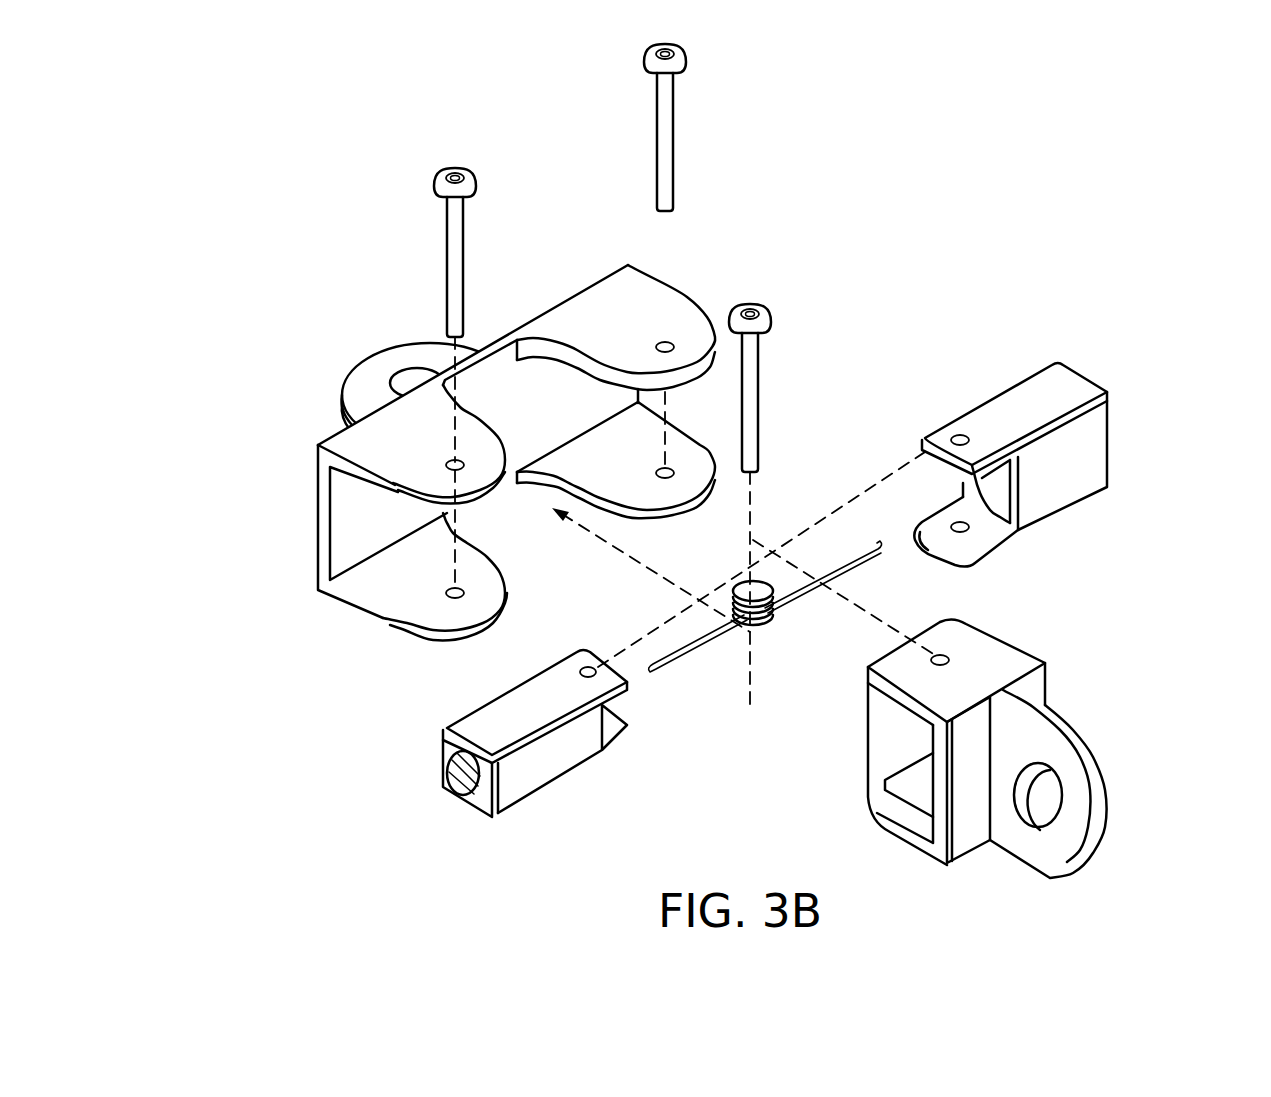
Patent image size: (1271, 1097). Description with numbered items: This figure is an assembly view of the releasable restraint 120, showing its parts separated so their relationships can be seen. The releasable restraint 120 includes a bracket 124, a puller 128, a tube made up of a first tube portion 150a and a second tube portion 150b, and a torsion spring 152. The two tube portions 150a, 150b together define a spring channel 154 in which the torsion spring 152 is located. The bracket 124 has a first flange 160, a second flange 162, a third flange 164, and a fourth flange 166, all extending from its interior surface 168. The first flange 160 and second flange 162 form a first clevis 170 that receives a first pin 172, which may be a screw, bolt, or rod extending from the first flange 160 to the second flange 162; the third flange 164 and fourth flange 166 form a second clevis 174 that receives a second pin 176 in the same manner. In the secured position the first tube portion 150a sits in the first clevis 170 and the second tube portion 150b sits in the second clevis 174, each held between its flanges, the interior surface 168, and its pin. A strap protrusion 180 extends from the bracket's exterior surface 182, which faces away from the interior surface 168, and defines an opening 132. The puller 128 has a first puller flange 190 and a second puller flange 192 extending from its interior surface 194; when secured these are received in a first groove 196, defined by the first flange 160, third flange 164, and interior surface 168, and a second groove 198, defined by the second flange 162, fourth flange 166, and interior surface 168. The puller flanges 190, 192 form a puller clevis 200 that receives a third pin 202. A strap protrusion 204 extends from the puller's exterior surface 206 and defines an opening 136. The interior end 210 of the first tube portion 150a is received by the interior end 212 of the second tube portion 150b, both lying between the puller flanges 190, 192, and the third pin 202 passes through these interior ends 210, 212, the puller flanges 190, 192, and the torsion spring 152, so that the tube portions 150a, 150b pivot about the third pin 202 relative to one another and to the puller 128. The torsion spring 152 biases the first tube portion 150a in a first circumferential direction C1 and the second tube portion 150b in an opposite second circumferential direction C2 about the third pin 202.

The releasable restraint 120 is at (270, 190).
The bracket 124 is at (488, 415).
The puller 128 is at (1048, 781).
The opening 132 is at (404, 377).
The opening 136 is at (1062, 813).
The first tube portion 150a is at (713, 655).
The second tube portion 150b is at (1006, 490).
The torsion spring 152 is at (767, 620).
The spring channel 154 is at (458, 780).
The first flange 160 is at (418, 470).
The second flange 162 is at (426, 594).
The third flange 164 is at (646, 334).
The fourth flange 166 is at (640, 466).
The interior surface 168 is at (542, 417).
The first clevis 170 is at (395, 492).
The first pin 172 is at (453, 228).
The second clevis 174 is at (703, 363).
The second pin 176 is at (670, 140).
The strap protrusion 180 is at (358, 388).
The exterior surface 182 is at (317, 505).
The first puller flange 190 is at (997, 676).
The second puller flange 192 is at (928, 799).
The interior surface 194 is at (933, 813).
The first groove 196 is at (572, 358).
The second groove 198 is at (513, 557).
The puller clevis 200 is at (888, 693).
The third pin 202 is at (752, 358).
The strap protrusion 204 is at (1040, 840).
The exterior surface 206 is at (986, 810).
The interior end 210 is at (618, 717).
The interior end 212 is at (948, 535).
The first circumferential direction C1 is at (770, 427).
The second circumferential direction C2 is at (730, 372).